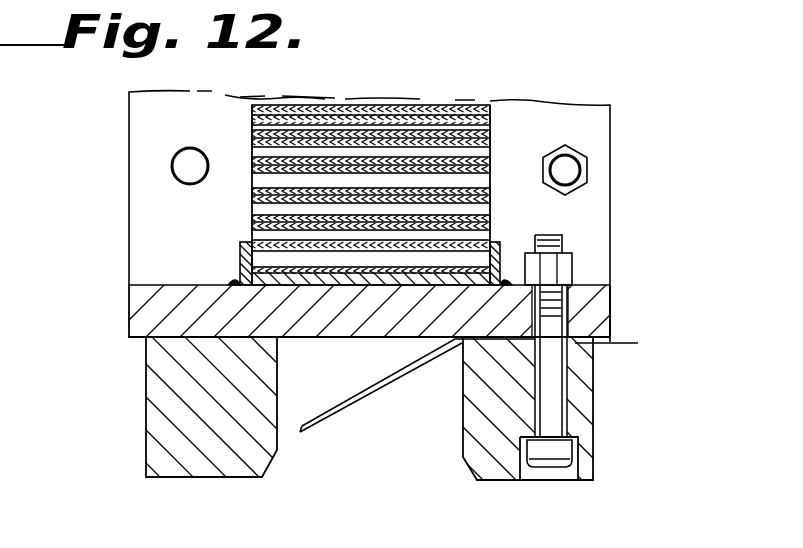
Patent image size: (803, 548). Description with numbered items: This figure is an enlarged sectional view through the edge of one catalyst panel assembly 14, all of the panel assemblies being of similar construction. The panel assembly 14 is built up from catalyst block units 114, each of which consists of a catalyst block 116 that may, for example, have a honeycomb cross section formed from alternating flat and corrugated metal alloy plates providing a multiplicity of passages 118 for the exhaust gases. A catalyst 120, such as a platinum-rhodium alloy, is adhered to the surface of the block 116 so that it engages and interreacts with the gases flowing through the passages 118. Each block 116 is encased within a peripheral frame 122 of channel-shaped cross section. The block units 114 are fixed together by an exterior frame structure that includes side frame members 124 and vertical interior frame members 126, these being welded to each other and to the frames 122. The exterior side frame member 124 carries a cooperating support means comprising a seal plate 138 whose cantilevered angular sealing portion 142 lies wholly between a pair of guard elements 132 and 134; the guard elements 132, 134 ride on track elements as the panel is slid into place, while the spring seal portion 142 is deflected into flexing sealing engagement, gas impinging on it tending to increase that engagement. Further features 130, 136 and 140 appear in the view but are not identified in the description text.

The catalyst panel assembly 14 is at (622, 173).
The catalyst block unit 114 is at (505, 93).
The catalyst block 116 is at (365, 171).
The passages 118 is at (447, 151).
The catalyst 120 is at (252, 116).
The peripheral frame 122 is at (240, 250).
The side frame member 124 is at (596, 300).
The vertical interior frame member 126 is at (141, 183).
The direction arrow 130 is at (350, 390).
The guard element 132 is at (151, 418).
The guard element 134 is at (588, 411).
The bolt head 136 is at (551, 452).
The seal plate 138 is at (398, 380).
The interface gap 140 is at (635, 343).
The cantilevered angular sealing portion 142 is at (301, 438).